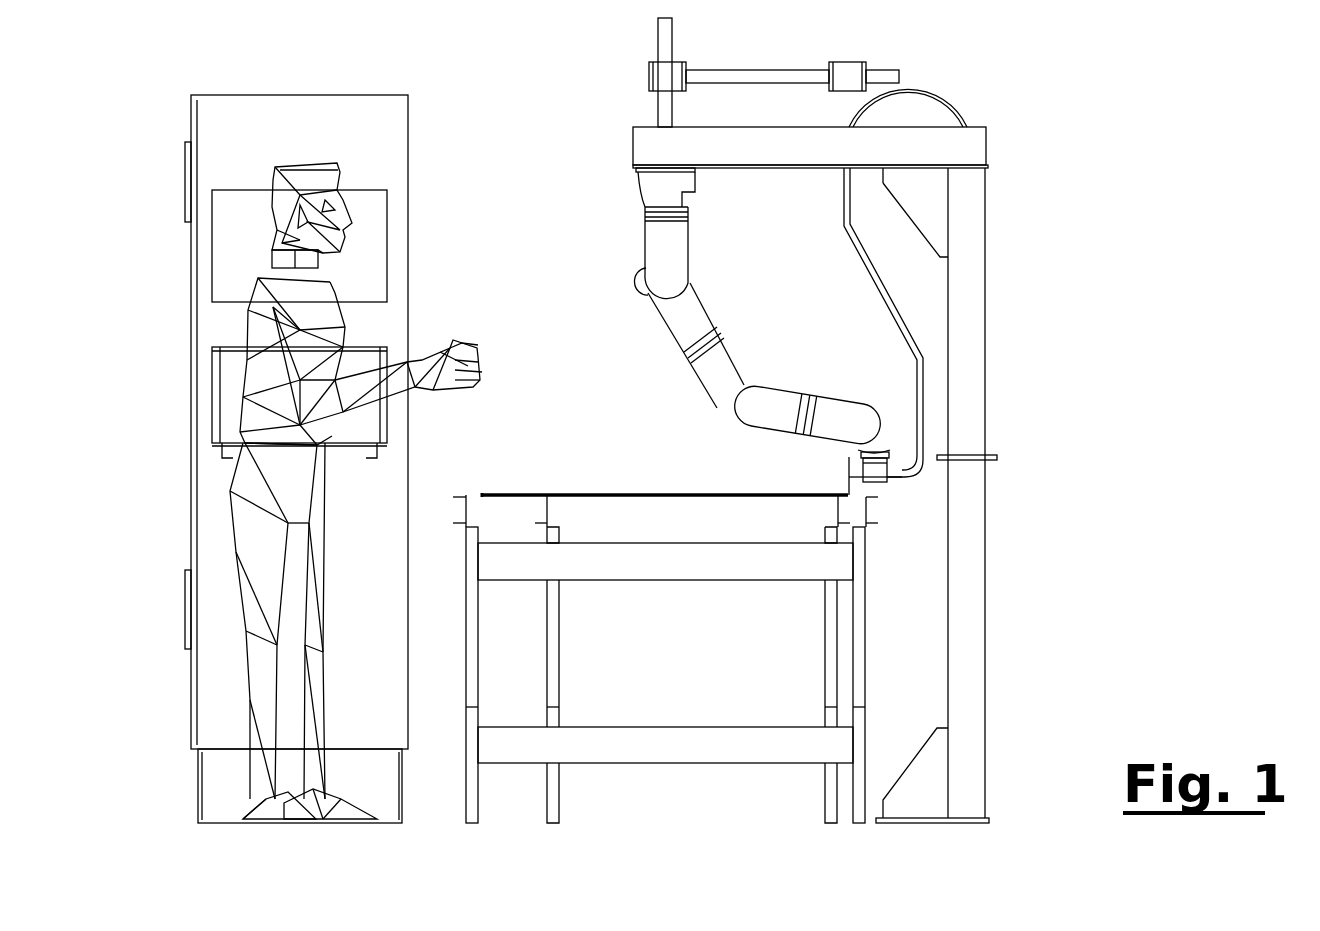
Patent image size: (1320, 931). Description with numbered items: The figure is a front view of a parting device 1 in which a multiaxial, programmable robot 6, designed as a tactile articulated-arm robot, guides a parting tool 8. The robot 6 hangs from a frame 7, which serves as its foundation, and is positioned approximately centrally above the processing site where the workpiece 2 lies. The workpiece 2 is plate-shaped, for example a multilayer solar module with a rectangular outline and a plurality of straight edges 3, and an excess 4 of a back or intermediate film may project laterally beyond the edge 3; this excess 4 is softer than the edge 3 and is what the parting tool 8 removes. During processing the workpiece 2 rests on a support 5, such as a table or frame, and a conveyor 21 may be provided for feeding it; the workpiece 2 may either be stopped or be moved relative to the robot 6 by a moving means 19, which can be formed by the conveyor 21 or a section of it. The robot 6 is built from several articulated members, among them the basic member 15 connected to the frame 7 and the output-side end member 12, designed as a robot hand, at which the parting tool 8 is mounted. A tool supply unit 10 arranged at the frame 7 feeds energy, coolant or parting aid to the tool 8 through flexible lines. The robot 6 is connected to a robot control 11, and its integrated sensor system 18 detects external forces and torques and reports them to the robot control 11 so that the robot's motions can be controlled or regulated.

The parting device 1 is at (1063, 203).
The workpiece 2 is at (604, 493).
The edge 3 is at (483, 493).
The excess 4 is at (474, 487).
The support 5 is at (672, 659).
The conveyor 21 is at (673, 568).
The robot 6 is at (705, 308).
The frame 7 is at (968, 352).
The parting tool 8 is at (860, 475).
The tool supply unit 10 is at (965, 103).
The robot control 11 is at (382, 165).
The end member 12 is at (883, 427).
The basic member 15 is at (672, 258).
The sensor system 18 is at (680, 393).
The moving means 19 is at (905, 588).